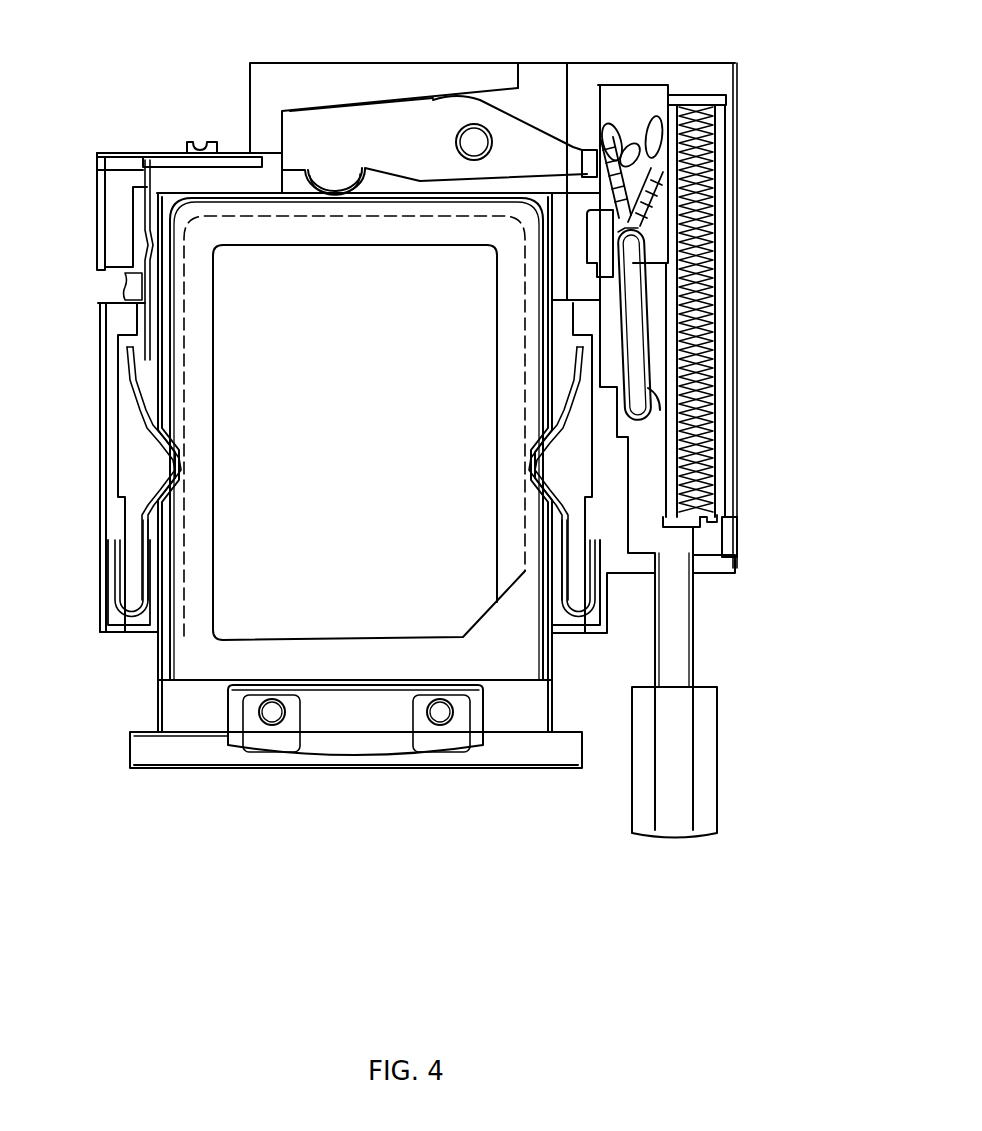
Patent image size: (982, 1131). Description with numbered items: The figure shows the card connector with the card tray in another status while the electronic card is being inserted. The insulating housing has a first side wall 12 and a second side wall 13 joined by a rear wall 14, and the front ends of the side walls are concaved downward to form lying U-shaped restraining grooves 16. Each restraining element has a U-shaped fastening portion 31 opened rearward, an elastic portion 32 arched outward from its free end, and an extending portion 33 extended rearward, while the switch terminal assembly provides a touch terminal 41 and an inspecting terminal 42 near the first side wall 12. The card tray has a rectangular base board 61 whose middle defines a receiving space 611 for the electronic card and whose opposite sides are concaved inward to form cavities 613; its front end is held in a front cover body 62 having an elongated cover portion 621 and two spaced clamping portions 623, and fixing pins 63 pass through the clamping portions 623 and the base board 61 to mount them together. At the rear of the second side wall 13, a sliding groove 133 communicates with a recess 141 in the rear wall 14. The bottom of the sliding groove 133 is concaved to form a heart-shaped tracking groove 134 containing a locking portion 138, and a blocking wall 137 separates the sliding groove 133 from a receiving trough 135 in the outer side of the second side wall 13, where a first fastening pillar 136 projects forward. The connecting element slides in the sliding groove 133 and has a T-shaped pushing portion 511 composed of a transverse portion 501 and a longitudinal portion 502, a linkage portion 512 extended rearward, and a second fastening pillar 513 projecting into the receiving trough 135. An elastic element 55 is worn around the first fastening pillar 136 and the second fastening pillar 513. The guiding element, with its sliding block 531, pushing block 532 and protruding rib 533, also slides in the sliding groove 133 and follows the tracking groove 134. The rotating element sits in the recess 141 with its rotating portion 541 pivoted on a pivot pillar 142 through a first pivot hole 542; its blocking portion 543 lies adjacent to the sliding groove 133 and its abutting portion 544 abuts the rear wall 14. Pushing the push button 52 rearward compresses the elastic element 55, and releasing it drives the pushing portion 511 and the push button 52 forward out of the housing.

The rear wall 14 is at (262, 88).
The recess 141 is at (357, 103).
The pivot pillar 142 is at (477, 146).
The rotating portion 541 is at (408, 130).
The first pivot hole 542 is at (472, 124).
The blocking portion 543 is at (604, 130).
The abutting portion 544 is at (335, 192).
The sliding groove 133 is at (640, 103).
The locking portion 138 is at (707, 108).
The first fastening pillar 136 is at (697, 128).
The blocking wall 137 is at (672, 148).
The tracking groove 134 is at (655, 172).
The pushing block 532 is at (602, 222).
The receiving trough 135 is at (715, 240).
The protruding rib 533 is at (630, 285).
The sliding block 531 is at (620, 317).
The elastic element 55 is at (715, 352).
The linkage portion 512 is at (643, 448).
The second fastening pillar 513 is at (717, 517).
The longitudinal portion 502 is at (693, 542).
The second side wall 13 is at (717, 567).
The pushing portion 511 is at (675, 612).
The transverse portion 501 is at (677, 640).
The push button 52 is at (675, 703).
The inspecting terminal 42 is at (148, 165).
The touch terminal 41 is at (146, 248).
The receiving space 611 is at (238, 340).
The extending portion 33 is at (128, 387).
The elastic portion 32 is at (168, 470).
The cavities 613 is at (175, 500).
The first side wall 12 is at (103, 550).
The fastening portion 31 is at (117, 583).
The restraining grooves 16 is at (113, 618).
The base board 61 is at (180, 658).
The cover portion 621 is at (147, 753).
The fixing pins 63 is at (275, 713).
The clamping portions 623 is at (360, 725).
The front cover body 62 is at (507, 753).